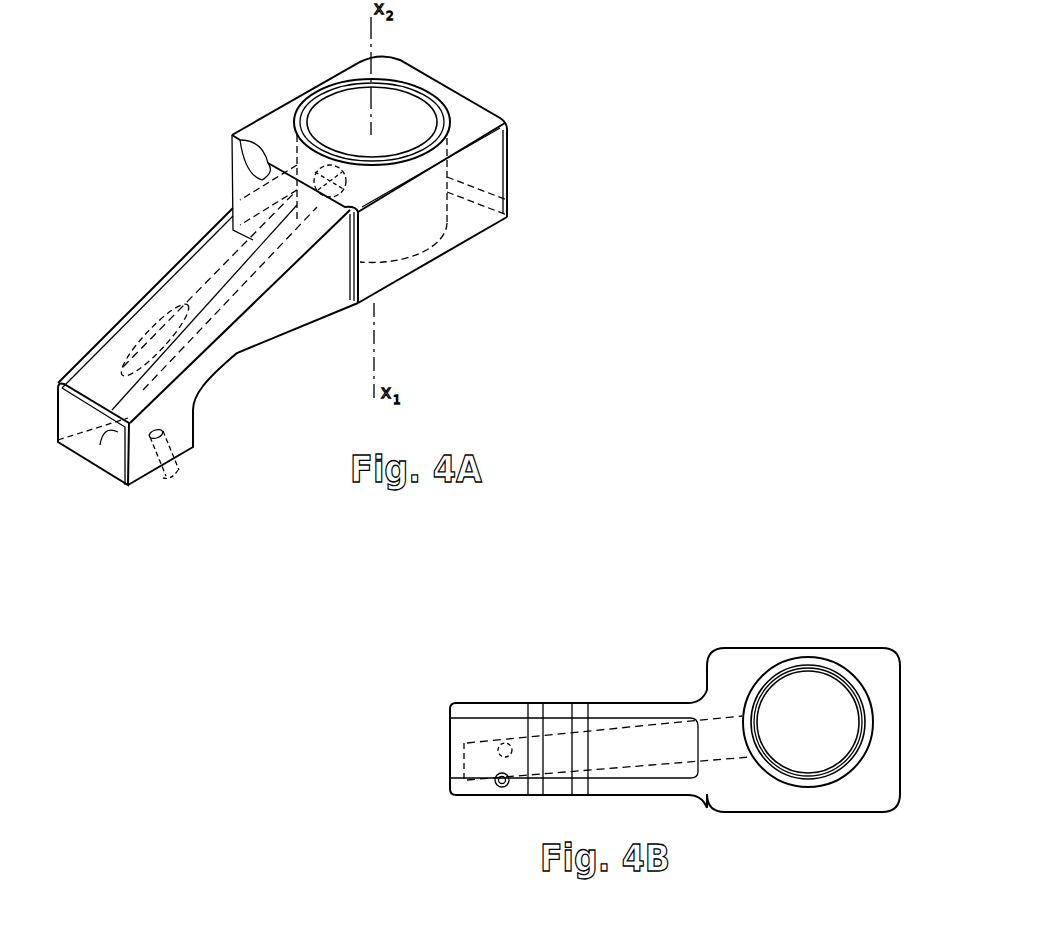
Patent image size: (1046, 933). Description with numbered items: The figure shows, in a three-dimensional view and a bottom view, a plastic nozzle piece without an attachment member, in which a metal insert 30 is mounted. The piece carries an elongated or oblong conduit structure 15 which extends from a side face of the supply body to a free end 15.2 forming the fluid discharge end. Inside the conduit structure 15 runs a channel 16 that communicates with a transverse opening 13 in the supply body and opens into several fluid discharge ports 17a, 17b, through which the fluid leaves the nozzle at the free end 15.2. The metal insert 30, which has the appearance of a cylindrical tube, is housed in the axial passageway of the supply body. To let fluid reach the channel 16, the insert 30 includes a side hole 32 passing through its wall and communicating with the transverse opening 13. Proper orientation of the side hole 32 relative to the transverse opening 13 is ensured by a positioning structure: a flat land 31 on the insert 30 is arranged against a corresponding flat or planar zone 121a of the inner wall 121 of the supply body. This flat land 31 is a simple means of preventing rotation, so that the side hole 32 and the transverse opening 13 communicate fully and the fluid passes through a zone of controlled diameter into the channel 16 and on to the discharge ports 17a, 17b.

In FIG. 4A, the transverse opening 13 is at (306, 189).
In FIG. 4A, the conduit structure 15 is at (130, 297).
In FIG. 4B, the conduit structure 15 is at (600, 749).
In FIG. 4A, the free end 15.2 is at (195, 469).
In FIG. 4A, the channel 16 is at (200, 320).
In FIG. 4A, the fluid discharge port 17a is at (104, 440).
In FIG. 4A, the fluid discharge port 17b is at (158, 455).
In FIG. 4A, the metal insert 30 is at (435, 107).
In FIG. 4B, the metal insert 30 is at (867, 693).
In FIG. 4A, the flat land 31 is at (318, 89).
In FIG. 4B, the flat land 31 is at (787, 672).
In FIG. 4A, the side hole 32 is at (312, 208).
In FIG. 4B, the inner wall 121 is at (850, 786).
In FIG. 4A, the flat 121a is at (302, 93).
In FIG. 4B, the flat 121a is at (830, 652).